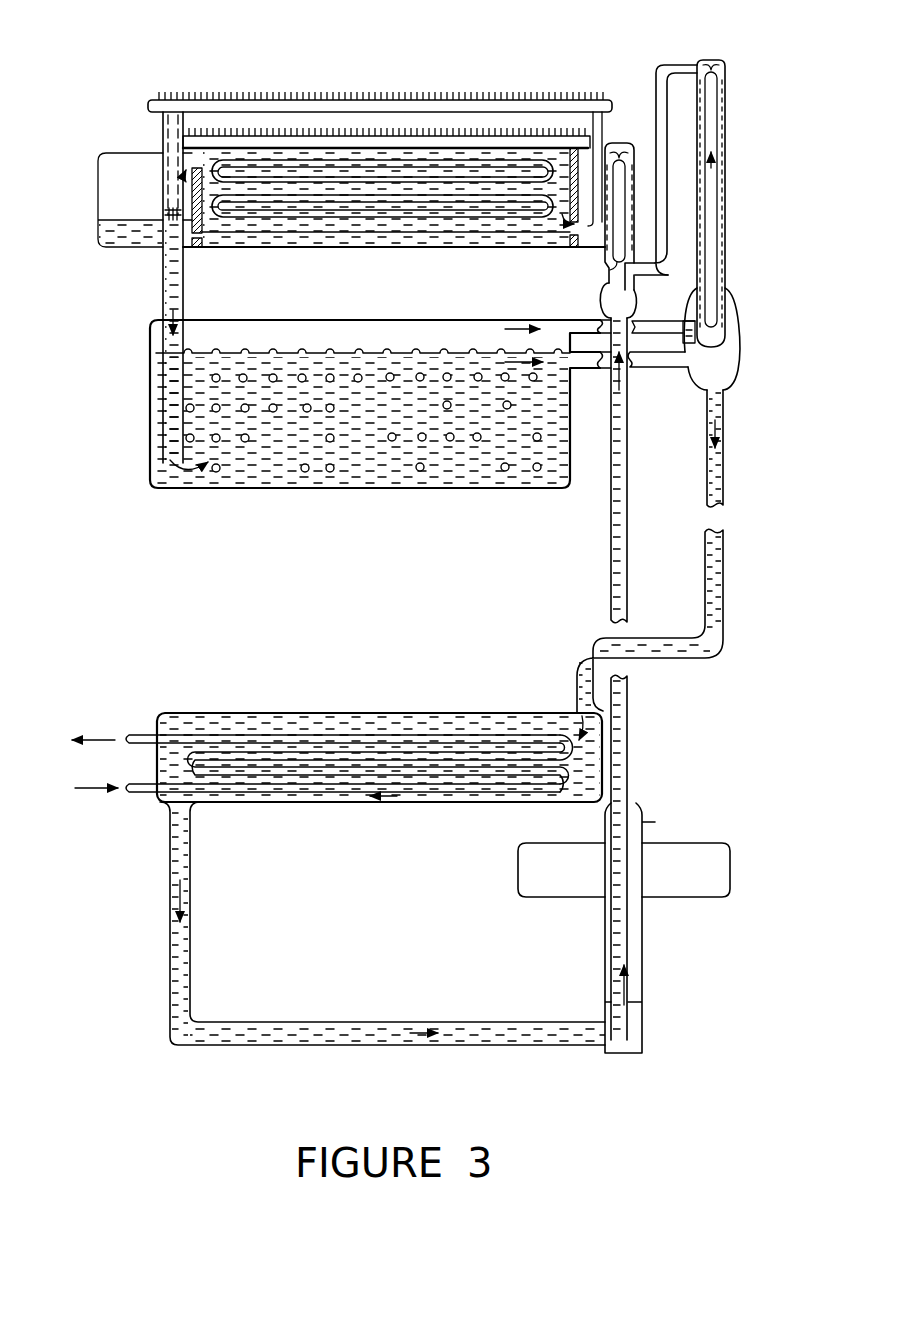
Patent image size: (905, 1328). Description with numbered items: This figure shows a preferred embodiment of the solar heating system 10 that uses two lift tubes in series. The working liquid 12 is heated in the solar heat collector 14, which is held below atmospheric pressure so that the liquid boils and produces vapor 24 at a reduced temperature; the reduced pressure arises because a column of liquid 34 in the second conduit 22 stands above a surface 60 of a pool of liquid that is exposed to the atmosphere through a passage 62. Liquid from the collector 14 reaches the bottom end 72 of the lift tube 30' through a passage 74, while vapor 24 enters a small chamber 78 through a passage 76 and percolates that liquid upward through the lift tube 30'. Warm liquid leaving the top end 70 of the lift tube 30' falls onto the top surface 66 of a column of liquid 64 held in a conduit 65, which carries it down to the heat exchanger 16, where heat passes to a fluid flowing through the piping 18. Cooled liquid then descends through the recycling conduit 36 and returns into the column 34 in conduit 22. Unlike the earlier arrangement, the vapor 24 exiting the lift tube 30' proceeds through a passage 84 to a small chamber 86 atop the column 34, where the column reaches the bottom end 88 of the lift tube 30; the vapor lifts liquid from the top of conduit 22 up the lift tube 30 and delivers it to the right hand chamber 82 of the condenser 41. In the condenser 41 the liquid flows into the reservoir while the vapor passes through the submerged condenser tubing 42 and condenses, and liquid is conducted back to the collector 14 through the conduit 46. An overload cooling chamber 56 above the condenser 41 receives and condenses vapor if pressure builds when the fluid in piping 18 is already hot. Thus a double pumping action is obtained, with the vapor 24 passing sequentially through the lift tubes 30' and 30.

The solar heating system 10 is at (125, 84).
The working liquid 12 is at (398, 423).
The solar heat collector 14 is at (152, 420).
The heat exchanger 16 is at (352, 713).
The piping 18 is at (148, 795).
The second conduit 22 is at (628, 556).
The vapor 24 is at (417, 340).
The lift tube 30 is at (593, 216).
The lift tube 30' is at (742, 199).
The column of liquid 34 is at (622, 484).
The recycling conduit 36 is at (428, 1026).
The condenser 41 is at (98, 193).
The condenser tubing 42 is at (416, 176).
The conduit 46 is at (163, 290).
The overload cooling chamber 56 is at (332, 109).
The surface 60 is at (637, 1000).
The passage 62 is at (643, 814).
The column of liquid 64 is at (723, 565).
The conduit 65 is at (722, 443).
The top surface 66 is at (720, 155).
The top end 70 is at (712, 67).
The bottom end 72 is at (735, 366).
The passage 74 is at (688, 401).
The passage 76 is at (657, 329).
The small chamber 78 is at (737, 327).
The right hand chamber 82 is at (618, 147).
The passage 84 is at (668, 67).
The small chamber 86 is at (602, 279).
The bottom end 88 is at (632, 301).